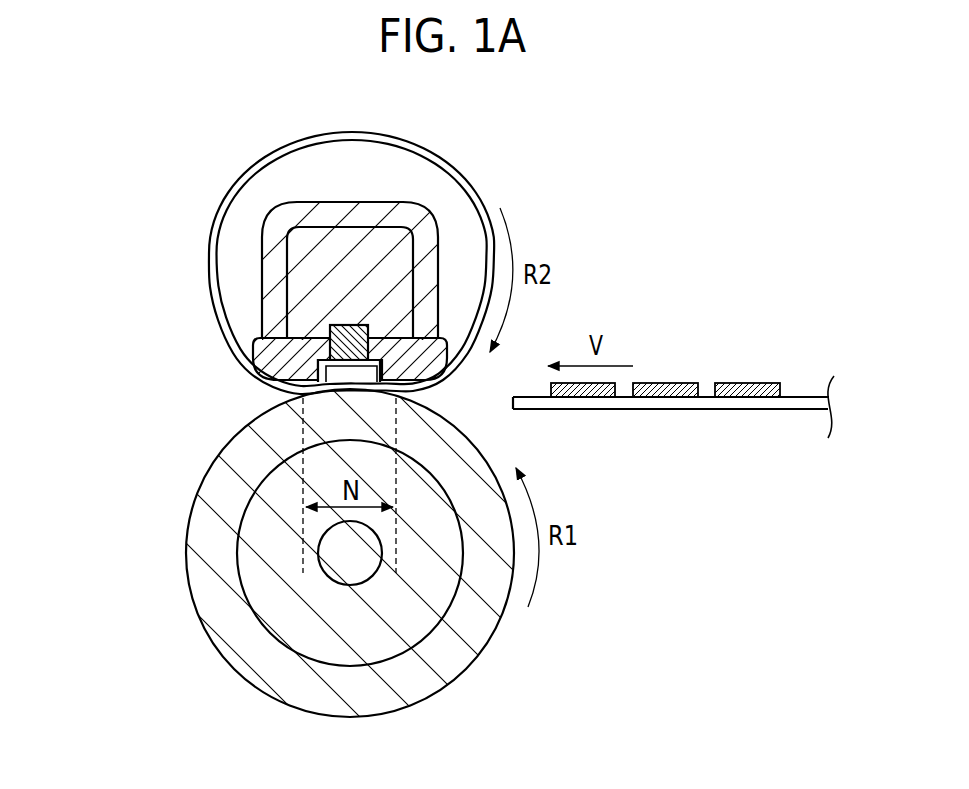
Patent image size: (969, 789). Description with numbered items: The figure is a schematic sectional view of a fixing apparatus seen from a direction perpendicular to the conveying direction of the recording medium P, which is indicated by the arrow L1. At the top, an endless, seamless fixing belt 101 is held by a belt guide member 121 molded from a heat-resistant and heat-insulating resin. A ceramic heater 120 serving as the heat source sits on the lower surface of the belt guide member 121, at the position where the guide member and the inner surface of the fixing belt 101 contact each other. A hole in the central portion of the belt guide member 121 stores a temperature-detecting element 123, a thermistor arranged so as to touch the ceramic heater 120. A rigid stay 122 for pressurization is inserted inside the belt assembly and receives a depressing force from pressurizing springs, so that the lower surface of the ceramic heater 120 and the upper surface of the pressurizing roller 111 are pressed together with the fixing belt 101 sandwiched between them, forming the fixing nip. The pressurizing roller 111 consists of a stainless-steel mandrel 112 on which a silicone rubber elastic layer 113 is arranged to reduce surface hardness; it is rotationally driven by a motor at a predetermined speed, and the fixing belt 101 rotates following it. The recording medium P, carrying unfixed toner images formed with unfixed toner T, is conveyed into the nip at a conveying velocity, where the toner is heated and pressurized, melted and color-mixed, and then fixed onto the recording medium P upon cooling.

The fixing belt 101 is at (410, 150).
The pressurizing roller 111 is at (300, 468).
The mandrel 112 is at (260, 530).
The elastic layer 113 is at (208, 583).
The ceramic heater 120 is at (318, 361).
The belt guide member 121 is at (260, 346).
The rigid stay 122 is at (410, 217).
The temperature-detecting element 123 is at (347, 323).
The recording medium P is at (698, 410).
The unfixed toner T is at (672, 383).
The conveying direction L1 is at (622, 362).